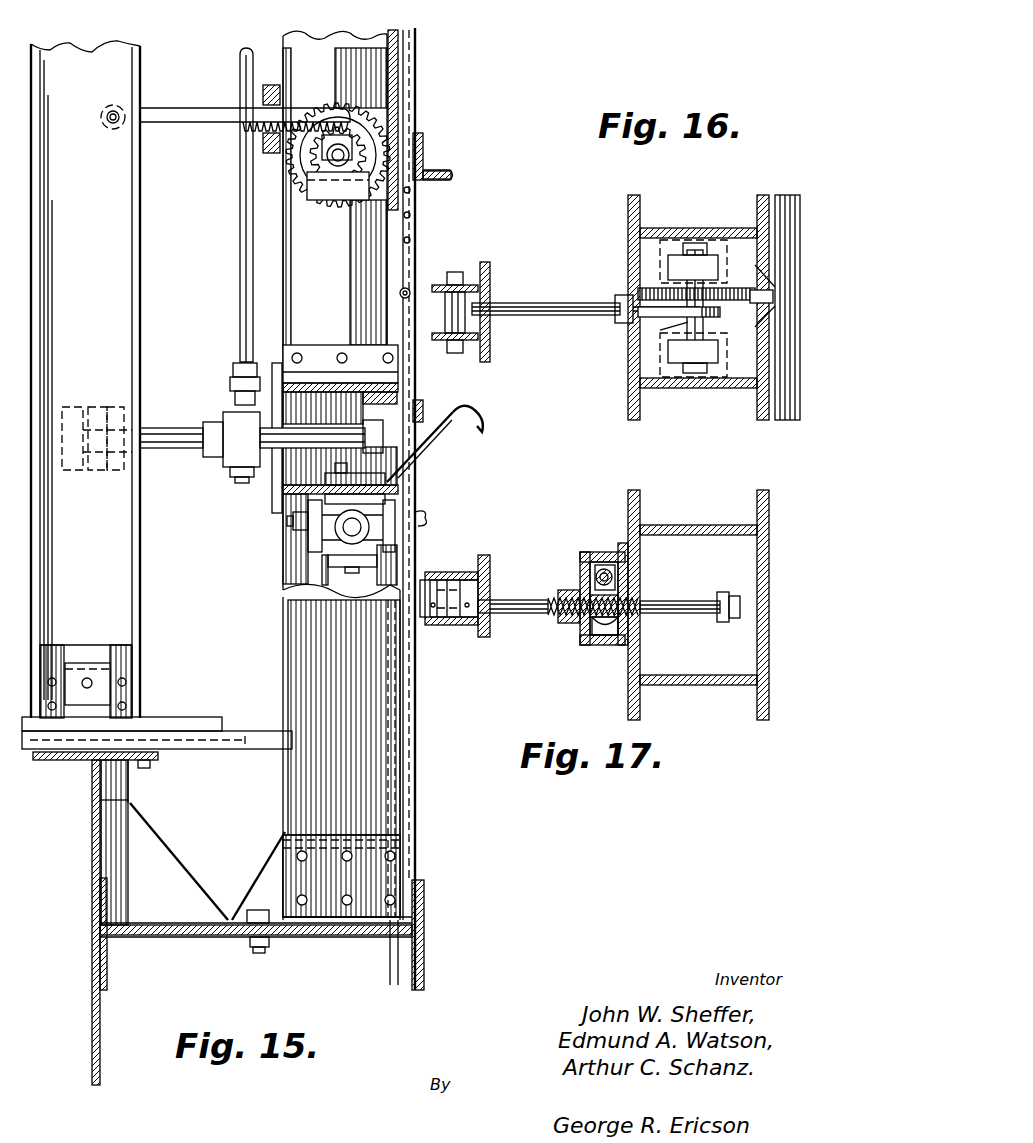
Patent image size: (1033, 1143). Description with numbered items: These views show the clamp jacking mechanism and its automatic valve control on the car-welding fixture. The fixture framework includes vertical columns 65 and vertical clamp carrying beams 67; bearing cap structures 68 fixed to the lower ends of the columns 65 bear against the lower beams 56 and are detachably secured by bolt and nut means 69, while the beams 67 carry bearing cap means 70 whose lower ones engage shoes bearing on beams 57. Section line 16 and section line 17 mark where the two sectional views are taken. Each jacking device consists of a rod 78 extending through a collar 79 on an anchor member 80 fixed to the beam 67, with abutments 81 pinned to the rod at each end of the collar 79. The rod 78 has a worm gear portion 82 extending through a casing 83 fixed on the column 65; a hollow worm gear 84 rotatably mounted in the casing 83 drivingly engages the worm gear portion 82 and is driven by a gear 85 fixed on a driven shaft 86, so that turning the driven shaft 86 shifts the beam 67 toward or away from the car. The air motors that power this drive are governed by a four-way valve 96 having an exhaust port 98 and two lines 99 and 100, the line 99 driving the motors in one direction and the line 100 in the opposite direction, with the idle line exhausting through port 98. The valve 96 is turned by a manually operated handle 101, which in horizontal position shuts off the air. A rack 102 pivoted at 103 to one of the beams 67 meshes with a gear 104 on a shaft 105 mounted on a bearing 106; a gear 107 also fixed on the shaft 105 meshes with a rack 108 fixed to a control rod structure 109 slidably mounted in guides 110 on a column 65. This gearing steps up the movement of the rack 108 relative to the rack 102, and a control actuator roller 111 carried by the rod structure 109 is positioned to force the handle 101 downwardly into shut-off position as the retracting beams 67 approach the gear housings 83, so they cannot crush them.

In FIG. 15, the section line 16— 16 is at (200, 80).
In FIG. 15, the section line 17— 17 is at (52, 438).
In FIG. 15, the lower beam 56 is at (172, 935).
In FIG. 15, the beam 57 is at (92, 833).
In FIG. 15, the vertical column 65 is at (300, 665).
In FIG. 16, the vertical column 65 is at (688, 397).
In FIG. 17, the vertical column 65 is at (693, 525).
In FIG. 15, the vertical clamp carrying beam 67 is at (128, 340).
In FIG. 15, the bearing cap structure 68 is at (270, 878).
In FIG. 15, the bolt and nut means 69 is at (262, 953).
In FIG. 15, the bearing cap means 70 is at (152, 730).
In FIG. 15, the rod 78 is at (175, 425).
In FIG. 17, the rod 78 is at (522, 600).
In FIG. 17, the collar 79 is at (448, 590).
In FIG. 17, the anchor member 80 is at (450, 630).
In FIG. 17, the abutment 81 is at (432, 625).
In FIG. 17, the worm gear portion 82 is at (572, 623).
In FIG. 15, the casing 83 is at (235, 455).
In FIG. 17, the casing 83 is at (605, 648).
In FIG. 17, the hollow worm gear 84 is at (592, 640).
In FIG. 15, the gear 85 is at (250, 230).
In FIG. 17, the gear 85 is at (598, 570).
In FIG. 17, the driven shaft 86 is at (606, 568).
In FIG. 15, the four-way valve 96 is at (340, 535).
In FIG. 15, the exhaust port 98 is at (348, 473).
In FIG. 15, the line 99 is at (290, 533).
In FIG. 15, the line 100 is at (428, 520).
In FIG. 15, the handle 101 is at (440, 412).
In FIG. 15, the rack 102 is at (192, 134).
In FIG. 16, the rack 102 is at (545, 302).
In FIG. 15, the pivot 103 is at (108, 126).
In FIG. 16, the pivot 103 is at (448, 283).
In FIG. 16, the gear 104 is at (720, 312).
In FIG. 15, the shaft 105 is at (330, 165).
In FIG. 16, the shaft 105 is at (680, 320).
In FIG. 15, the bearing 106 is at (352, 185).
In FIG. 16, the bearing 106 is at (708, 255).
In FIG. 15, the gear 107 is at (318, 108).
In FIG. 16, the gear 107 is at (640, 290).
In FIG. 15, the rack 108 is at (380, 47).
In FIG. 15, the control rod structure 109 is at (405, 255).
In FIG. 15, the guide 110 is at (428, 155).
In FIG. 15, the control actuator roller 111 is at (398, 296).